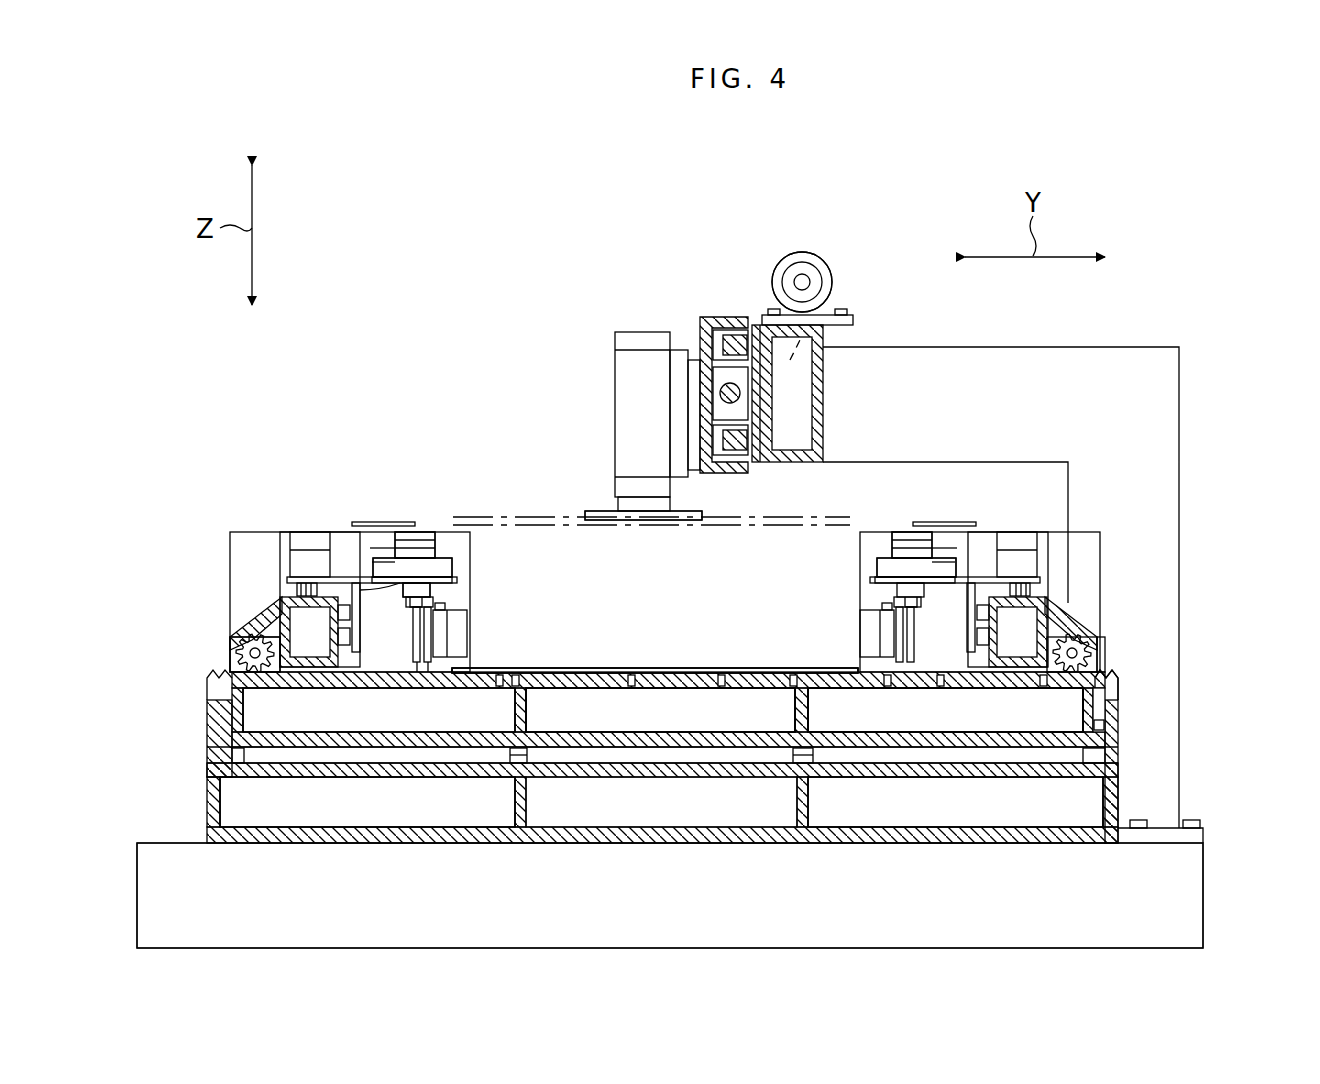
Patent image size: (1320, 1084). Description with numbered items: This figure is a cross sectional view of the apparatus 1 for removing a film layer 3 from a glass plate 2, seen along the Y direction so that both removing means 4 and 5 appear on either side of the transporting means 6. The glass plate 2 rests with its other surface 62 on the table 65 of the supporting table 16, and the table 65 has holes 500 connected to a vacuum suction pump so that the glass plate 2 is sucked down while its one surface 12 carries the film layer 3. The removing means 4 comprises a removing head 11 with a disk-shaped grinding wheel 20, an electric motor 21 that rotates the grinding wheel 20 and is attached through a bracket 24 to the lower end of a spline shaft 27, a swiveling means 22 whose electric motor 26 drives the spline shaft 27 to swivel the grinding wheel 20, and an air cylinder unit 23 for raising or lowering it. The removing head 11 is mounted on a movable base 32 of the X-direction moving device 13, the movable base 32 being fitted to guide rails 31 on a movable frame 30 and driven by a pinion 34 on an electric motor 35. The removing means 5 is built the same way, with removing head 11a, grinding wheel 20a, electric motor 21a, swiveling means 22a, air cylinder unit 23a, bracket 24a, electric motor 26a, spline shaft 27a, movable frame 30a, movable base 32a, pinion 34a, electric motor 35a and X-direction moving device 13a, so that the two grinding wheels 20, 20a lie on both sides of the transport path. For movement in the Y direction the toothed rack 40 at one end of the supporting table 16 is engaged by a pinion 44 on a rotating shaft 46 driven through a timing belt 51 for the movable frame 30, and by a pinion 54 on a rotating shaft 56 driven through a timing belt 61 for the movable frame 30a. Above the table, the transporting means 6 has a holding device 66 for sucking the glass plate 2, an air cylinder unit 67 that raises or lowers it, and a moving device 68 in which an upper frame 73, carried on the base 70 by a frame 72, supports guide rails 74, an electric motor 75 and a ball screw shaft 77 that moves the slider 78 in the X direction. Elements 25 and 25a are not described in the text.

The apparatus 1 is at (1159, 258).
The glass plate 2 is at (712, 668).
The film layer 3 is at (756, 668).
The removing means 4 is at (278, 475).
The removing means 5 is at (1048, 515).
The transporting means 6 is at (587, 345).
The removing head 11 is at (392, 495).
The removing head 11a is at (888, 510).
The one surface 12 is at (672, 668).
The X-direction moving device 13 is at (287, 528).
The X-direction moving device 13a is at (1035, 512).
The supporting table 16 is at (213, 797).
The grinding wheel 20 is at (407, 700).
The grinding wheel 20a is at (920, 655).
The electric motor 21 is at (465, 628).
The electric motor 21a is at (872, 638).
The swiveling means 22 is at (468, 583).
The swiveling means 22a is at (872, 585).
The air cylinder unit 23 is at (420, 528).
The air cylinder unit 23a is at (922, 532).
The bracket 24 is at (433, 672).
The bracket 24a is at (840, 674).
The post 25 is at (414, 650).
The post 25a is at (900, 662).
The electric motor 26 is at (452, 558).
The electric motor 26a is at (877, 558).
The spline shaft 27 is at (400, 608).
The spline shaft 27a is at (960, 642).
The movable frame 30 is at (340, 658).
The movable frame 30a is at (995, 650).
The guide rails 31 is at (350, 658).
The movable base 32 is at (288, 598).
The movable base 32a is at (1000, 590).
The pinion 34 is at (291, 589).
The pinion 34a is at (1025, 585).
The electric motor 35 is at (317, 532).
The electric motor 35a is at (1035, 538).
The toothed rack 40 is at (220, 691).
The pinion 44 is at (236, 626).
The rotating shaft 46 is at (240, 652).
The timing belt 51 is at (268, 616).
The pinion 54 is at (1085, 664).
The rotating shaft 56 is at (1072, 648).
The timing belt 61 is at (1050, 597).
The other surface 62 is at (665, 675).
The table 65 is at (578, 675).
The holding device 66 is at (592, 512).
The air cylinder unit 67 is at (636, 335).
The moving device 68 is at (822, 245).
The base 70 is at (1190, 882).
The frame 72 is at (1179, 410).
The upper frame 73 is at (808, 462).
The guide rails 74 is at (730, 330).
The electric motor 75 is at (832, 282).
The ball screw shaft 77 is at (748, 391).
The slider 78 is at (708, 317).
The holes 500 is at (673, 676).